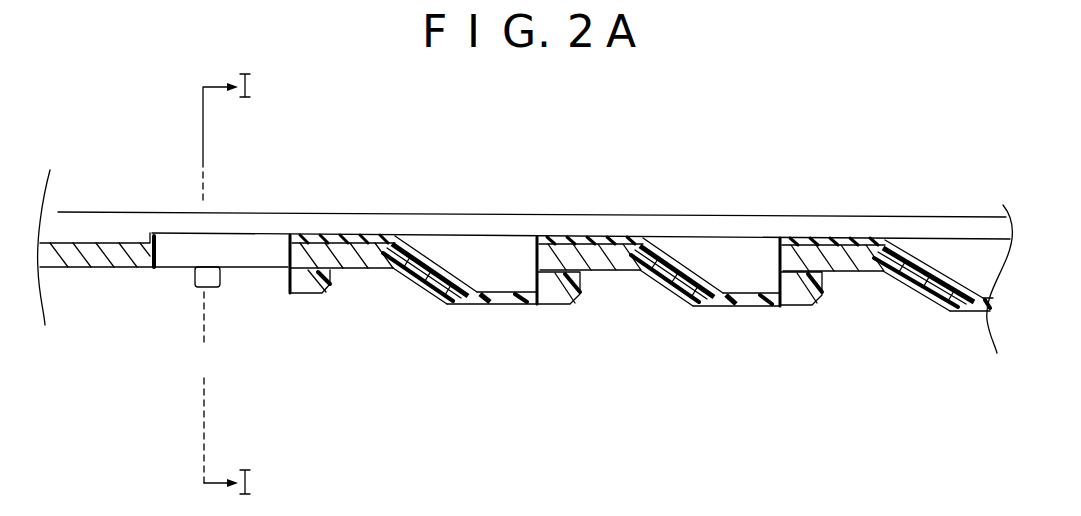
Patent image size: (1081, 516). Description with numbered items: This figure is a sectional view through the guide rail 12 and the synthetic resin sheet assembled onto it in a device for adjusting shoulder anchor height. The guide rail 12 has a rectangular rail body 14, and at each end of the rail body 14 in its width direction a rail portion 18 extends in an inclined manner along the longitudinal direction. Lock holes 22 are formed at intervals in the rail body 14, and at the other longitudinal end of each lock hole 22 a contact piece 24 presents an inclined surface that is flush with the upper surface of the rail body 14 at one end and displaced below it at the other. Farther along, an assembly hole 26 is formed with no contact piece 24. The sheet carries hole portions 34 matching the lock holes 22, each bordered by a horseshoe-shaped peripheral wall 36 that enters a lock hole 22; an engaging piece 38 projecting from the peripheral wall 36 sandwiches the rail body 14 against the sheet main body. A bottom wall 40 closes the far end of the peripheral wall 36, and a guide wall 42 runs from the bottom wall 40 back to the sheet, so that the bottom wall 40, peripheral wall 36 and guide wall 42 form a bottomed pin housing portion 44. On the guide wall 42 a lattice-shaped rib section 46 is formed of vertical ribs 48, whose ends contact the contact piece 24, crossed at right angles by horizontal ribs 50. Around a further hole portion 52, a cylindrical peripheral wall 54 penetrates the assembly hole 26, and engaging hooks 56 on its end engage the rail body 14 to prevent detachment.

The guide rail 12 is at (752, 209).
The rail body 14 is at (120, 242).
The rail portion 18 is at (567, 224).
The lock hole 22 is at (795, 246).
The contact piece 24 is at (398, 270).
The assembly hole 26 is at (278, 265).
The hole portion 34 is at (538, 238).
The peripheral wall 36 is at (528, 305).
The engaging piece 38 is at (327, 293).
The bottom wall 40 is at (533, 306).
The guide wall 42 is at (497, 305).
The pin housing portion 44 is at (485, 256).
The rib section 46 is at (457, 321).
The vertical rib 48 is at (405, 284).
The horizontal rib 50 is at (446, 300).
The hole portion 52 is at (291, 243).
The peripheral wall 54 is at (278, 268).
The engaging hook 56 is at (207, 288).